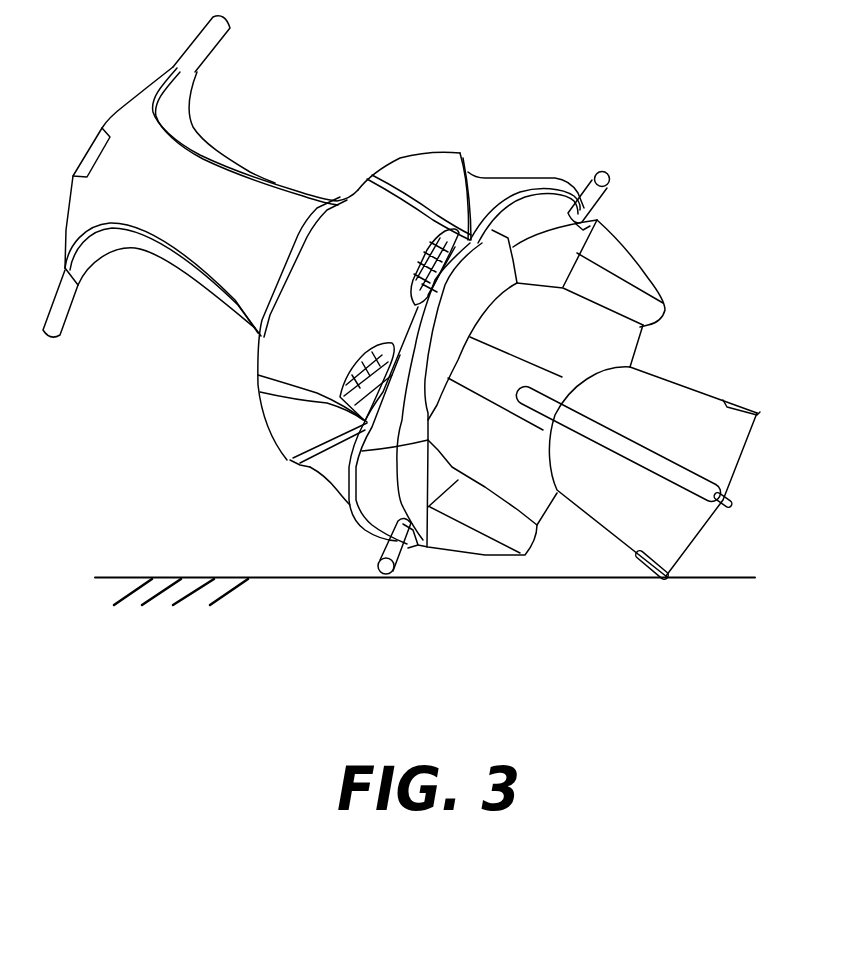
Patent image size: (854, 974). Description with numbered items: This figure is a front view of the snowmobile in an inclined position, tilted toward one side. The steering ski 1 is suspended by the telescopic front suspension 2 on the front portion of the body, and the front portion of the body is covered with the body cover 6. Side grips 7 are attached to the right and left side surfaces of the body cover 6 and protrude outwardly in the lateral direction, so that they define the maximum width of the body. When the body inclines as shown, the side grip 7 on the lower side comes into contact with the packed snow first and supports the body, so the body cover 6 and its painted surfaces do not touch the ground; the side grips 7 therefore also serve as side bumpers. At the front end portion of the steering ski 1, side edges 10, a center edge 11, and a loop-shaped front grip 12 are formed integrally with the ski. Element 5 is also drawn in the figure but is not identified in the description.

The steering ski 1 is at (704, 392).
The telescopic front suspension 2 is at (490, 390).
The backrest 5 is at (213, 38).
The body cover 6 is at (431, 163).
The side grip 7 is at (587, 175).
The side edge 10 is at (665, 580).
The center edge 11 is at (735, 505).
The loop-shaped front grip 12 is at (540, 390).